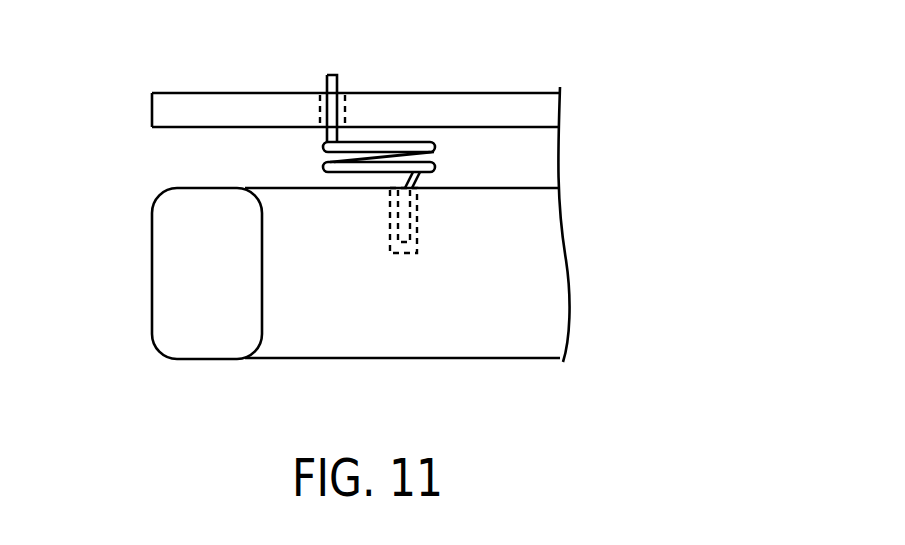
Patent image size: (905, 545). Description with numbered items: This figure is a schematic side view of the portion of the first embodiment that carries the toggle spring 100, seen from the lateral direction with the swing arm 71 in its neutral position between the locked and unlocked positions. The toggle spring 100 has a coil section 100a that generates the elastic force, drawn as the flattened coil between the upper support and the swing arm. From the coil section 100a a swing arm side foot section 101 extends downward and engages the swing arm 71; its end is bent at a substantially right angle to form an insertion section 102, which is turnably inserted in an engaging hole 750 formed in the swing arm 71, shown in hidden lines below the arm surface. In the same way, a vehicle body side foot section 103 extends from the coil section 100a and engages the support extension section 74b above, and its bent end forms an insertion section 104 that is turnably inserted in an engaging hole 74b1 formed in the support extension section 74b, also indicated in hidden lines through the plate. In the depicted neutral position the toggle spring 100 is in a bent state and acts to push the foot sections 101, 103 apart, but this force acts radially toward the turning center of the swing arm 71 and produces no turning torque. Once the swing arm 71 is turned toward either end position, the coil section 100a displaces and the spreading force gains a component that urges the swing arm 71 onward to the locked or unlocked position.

The swing arm 71 is at (126, 322).
The support extension section 74b is at (528, 92).
The engaging hole 74b1 is at (347, 98).
The toggle spring 100 is at (416, 125).
The coil section 100a is at (438, 166).
The swing arm side foot section 101 is at (387, 183).
The insertion section 102 is at (413, 213).
The vehicle body side foot section 103 is at (322, 142).
The insertion section 104 is at (323, 83).
The engaging hole 750 is at (417, 240).